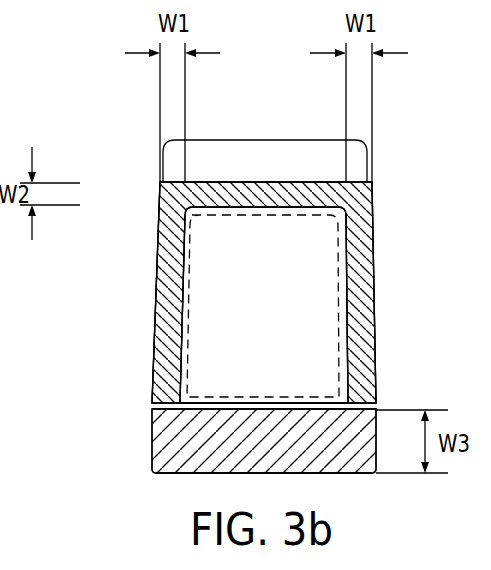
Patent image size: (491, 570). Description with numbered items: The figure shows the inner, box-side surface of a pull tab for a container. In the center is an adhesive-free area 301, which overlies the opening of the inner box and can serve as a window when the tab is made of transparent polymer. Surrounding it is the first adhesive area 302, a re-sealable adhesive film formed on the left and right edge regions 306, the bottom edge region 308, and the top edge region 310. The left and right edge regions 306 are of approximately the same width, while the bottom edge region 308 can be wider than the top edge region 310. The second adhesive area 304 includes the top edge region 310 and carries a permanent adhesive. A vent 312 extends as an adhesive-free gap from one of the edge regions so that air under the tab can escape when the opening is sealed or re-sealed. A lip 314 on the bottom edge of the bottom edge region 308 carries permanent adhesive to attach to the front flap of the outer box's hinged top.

The adhesive-free area 301 is at (302, 285).
The first adhesive area 302 is at (150, 183).
The second adhesive area 304 is at (150, 409).
The left and right edge regions 306 is at (157, 277).
The bottom edge region 308 is at (238, 187).
The top edge region 310 is at (188, 450).
The vent 312 is at (375, 405).
The lip 314 is at (310, 162).